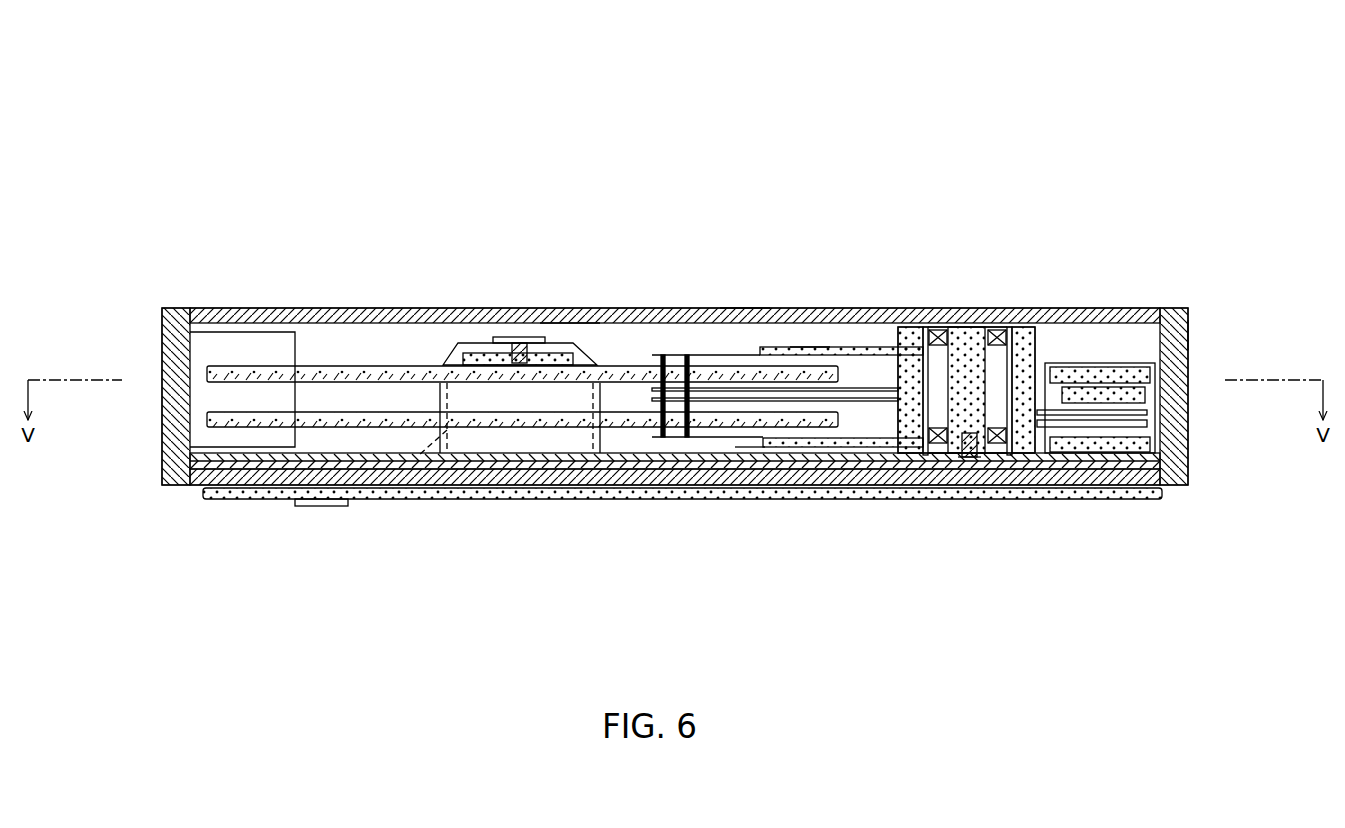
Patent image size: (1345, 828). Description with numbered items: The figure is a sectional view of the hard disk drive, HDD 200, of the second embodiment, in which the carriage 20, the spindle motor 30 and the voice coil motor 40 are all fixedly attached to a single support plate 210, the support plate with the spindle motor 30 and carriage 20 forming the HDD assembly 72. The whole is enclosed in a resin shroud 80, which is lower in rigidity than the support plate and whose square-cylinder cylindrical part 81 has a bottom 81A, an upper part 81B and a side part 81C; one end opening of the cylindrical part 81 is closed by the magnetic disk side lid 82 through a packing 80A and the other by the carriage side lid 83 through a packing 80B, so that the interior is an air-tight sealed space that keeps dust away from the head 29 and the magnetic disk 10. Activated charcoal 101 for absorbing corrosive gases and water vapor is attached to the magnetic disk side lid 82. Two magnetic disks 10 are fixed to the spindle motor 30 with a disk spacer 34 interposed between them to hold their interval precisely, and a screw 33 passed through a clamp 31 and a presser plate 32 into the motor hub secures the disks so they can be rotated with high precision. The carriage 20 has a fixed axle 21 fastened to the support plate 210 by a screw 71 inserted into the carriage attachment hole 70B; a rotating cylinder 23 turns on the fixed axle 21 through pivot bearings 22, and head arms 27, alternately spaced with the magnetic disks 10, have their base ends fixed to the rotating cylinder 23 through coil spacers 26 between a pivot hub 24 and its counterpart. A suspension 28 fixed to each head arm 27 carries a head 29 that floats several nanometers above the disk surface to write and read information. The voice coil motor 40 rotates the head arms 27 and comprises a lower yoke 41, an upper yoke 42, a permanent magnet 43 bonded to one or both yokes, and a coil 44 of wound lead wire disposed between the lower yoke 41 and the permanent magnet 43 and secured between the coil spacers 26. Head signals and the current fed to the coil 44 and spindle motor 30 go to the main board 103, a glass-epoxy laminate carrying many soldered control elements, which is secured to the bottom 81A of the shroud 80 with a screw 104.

The HDD 200 is at (1122, 118).
The shroud 80 is at (233, 307).
The packing 80A is at (182, 310).
The packing 80B is at (1165, 310).
The cylindrical part 81 is at (745, 308).
The bottom 81A is at (378, 487).
The upper part 81B is at (563, 332).
The side part 81C is at (385, 340).
The magnetic disk side lid 82 is at (170, 432).
The carriage side lid 83 is at (1188, 335).
The activated charcoal 101 is at (222, 352).
The main board 103 is at (585, 497).
The screw 104 is at (313, 506).
The magnetic disk 10 is at (312, 366).
The spindle motor 30 is at (418, 456).
The clamp 31 is at (518, 337).
The presser plate 32 is at (455, 345).
The screw 33 is at (490, 337).
The disk spacer 34 is at (488, 397).
The head 29 is at (668, 355).
The suspension 28 is at (712, 353).
The head arm 27 is at (783, 347).
The support plate 210 is at (740, 447).
The HDD assembly 72 is at (803, 338).
The carriage 20 is at (840, 345).
The rotating cylinder 23 is at (913, 327).
The fixed axle 21 is at (960, 335).
The pivot bearing 22 is at (998, 335).
The pivot hub 24 is at (1023, 327).
The coil spacer 26 is at (1037, 355).
The carriage attachment hole 70B is at (965, 457).
The screw 71 is at (975, 457).
The voice coil motor 40 is at (1113, 360).
The lower yoke 41 is at (1093, 448).
The upper yoke 42 is at (1083, 367).
The permanent magnet 43 is at (1145, 390).
The coil 44 is at (1140, 425).